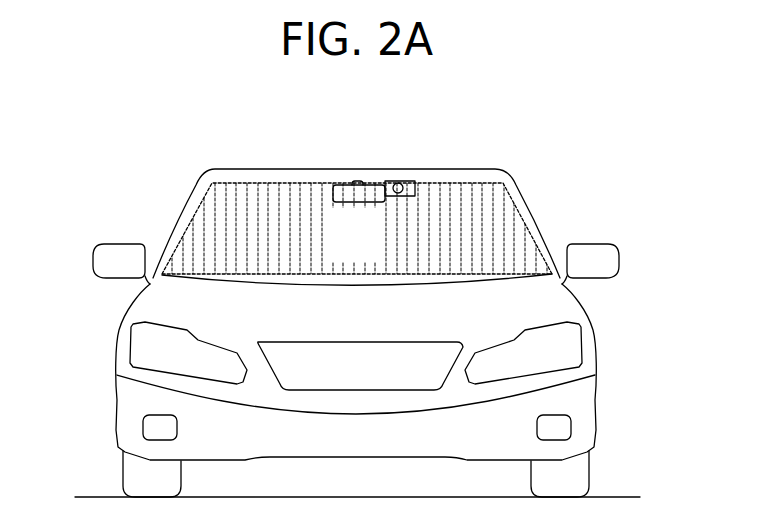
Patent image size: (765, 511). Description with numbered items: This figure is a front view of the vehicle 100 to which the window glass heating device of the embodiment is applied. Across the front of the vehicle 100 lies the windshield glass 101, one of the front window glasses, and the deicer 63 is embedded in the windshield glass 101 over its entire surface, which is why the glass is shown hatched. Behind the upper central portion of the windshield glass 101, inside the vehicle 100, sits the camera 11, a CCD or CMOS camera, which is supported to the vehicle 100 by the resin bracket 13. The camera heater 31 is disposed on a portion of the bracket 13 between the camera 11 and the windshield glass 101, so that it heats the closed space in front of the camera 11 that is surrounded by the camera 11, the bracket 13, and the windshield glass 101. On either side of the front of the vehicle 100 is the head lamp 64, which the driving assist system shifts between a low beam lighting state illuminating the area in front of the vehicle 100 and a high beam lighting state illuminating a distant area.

The vehicle 100 is at (500, 154).
The deicer 63 is at (513, 223).
The head lamp 64 is at (139, 345).
The windshield glass 101 is at (376, 252).
The bracket 13 is at (385, 182).
The camera 11 is at (408, 183).
The camera heater 31 is at (393, 183).